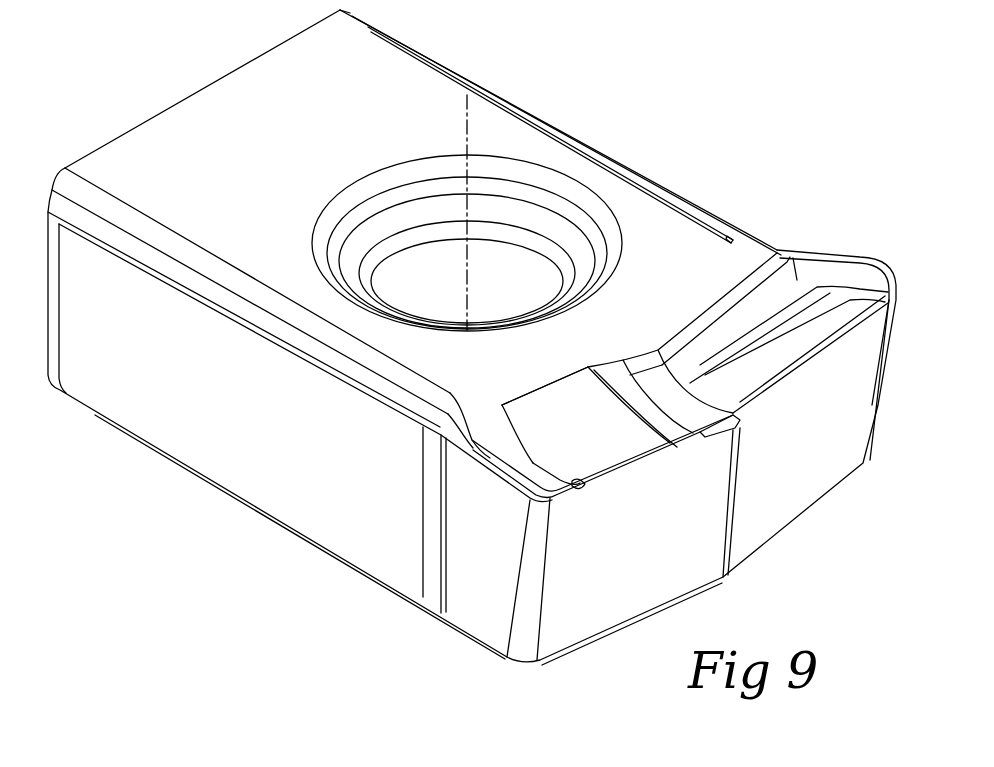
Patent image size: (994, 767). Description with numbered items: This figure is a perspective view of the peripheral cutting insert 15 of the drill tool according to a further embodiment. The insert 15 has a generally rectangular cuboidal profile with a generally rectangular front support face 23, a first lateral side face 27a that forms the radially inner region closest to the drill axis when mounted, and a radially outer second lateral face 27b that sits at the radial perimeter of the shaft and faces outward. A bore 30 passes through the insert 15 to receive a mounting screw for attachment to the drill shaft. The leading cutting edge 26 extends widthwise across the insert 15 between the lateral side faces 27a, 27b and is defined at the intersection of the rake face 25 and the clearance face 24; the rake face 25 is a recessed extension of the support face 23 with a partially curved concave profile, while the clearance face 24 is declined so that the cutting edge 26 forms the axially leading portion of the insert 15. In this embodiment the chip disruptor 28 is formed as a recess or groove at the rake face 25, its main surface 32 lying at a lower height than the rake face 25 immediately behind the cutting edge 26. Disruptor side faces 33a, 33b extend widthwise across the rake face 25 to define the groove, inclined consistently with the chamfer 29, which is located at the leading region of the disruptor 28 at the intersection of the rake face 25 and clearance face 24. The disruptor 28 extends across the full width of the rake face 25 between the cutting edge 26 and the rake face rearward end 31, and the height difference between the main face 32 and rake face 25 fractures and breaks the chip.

The peripheral insert 15 is at (624, 99).
The front support face 23 is at (282, 146).
The clearance face 24 is at (796, 479).
The rake face 25 is at (777, 303).
The cutting edge 26 is at (830, 347).
The first lateral side face 27a is at (160, 403).
The second lateral face 27b is at (518, 102).
The chip disruptor 28 is at (560, 385).
The chamfer 29 is at (617, 478).
The bore 30 is at (527, 292).
The rake face rearward end 31 is at (700, 313).
The disruptor main face 32 is at (607, 446).
The disruptor side face 33a is at (518, 437).
The disruptor side face 33b is at (650, 433).